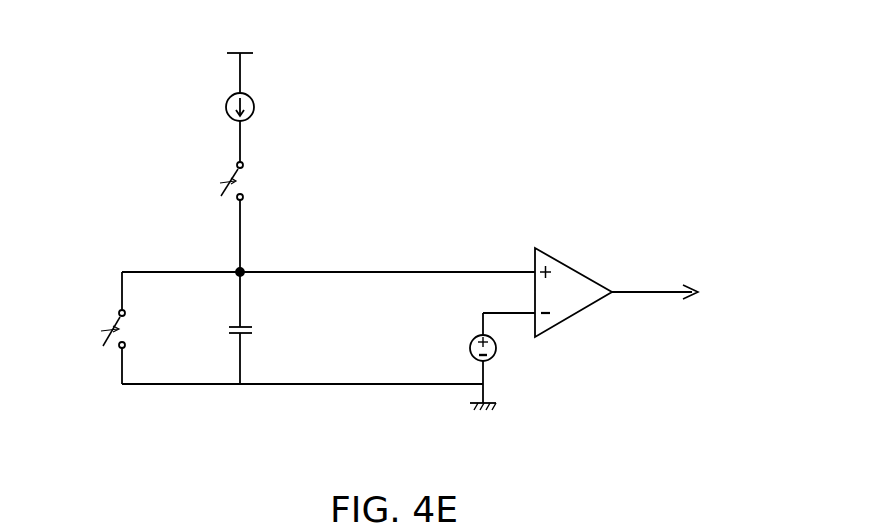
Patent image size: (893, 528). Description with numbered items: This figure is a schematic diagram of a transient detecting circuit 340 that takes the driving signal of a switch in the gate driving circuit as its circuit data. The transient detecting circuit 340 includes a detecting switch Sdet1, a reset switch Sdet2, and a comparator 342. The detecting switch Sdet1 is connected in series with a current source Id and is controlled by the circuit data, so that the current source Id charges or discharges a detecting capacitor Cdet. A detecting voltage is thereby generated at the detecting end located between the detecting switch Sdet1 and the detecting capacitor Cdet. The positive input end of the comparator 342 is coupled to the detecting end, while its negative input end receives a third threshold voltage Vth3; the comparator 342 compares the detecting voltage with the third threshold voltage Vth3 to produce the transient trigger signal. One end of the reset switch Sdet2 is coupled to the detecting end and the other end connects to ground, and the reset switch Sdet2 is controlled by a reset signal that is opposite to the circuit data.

The transient detecting circuit 340 is at (122, 129).
The comparator 342 is at (575, 267).
The current source Id is at (226, 108).
The detecting switch Sdet1 is at (242, 181).
The reset switch Sdet2 is at (120, 329).
The detecting capacitor Cdet is at (268, 331).
The third threshold voltage Vth3 is at (454, 346).